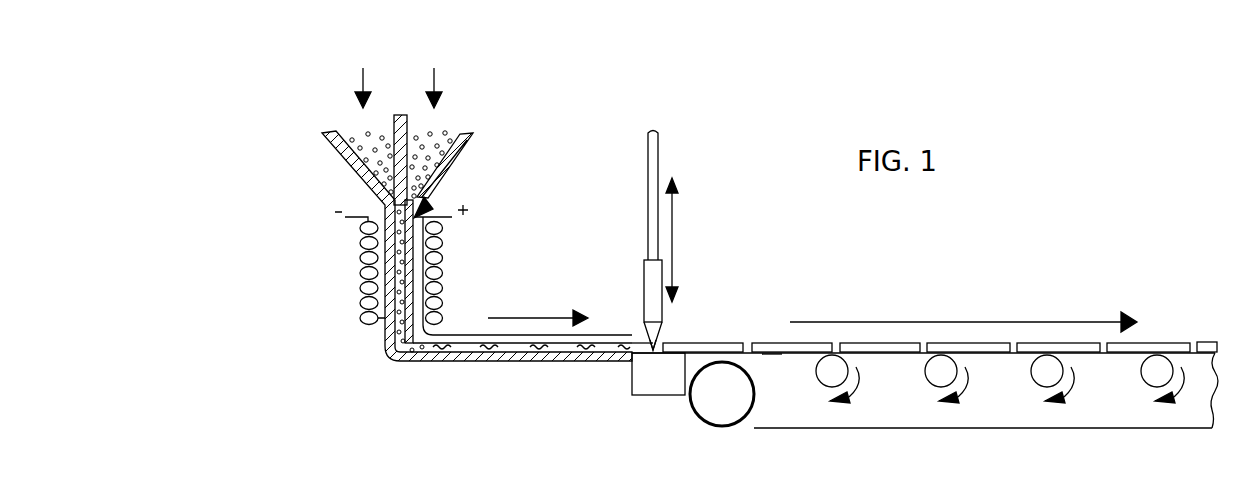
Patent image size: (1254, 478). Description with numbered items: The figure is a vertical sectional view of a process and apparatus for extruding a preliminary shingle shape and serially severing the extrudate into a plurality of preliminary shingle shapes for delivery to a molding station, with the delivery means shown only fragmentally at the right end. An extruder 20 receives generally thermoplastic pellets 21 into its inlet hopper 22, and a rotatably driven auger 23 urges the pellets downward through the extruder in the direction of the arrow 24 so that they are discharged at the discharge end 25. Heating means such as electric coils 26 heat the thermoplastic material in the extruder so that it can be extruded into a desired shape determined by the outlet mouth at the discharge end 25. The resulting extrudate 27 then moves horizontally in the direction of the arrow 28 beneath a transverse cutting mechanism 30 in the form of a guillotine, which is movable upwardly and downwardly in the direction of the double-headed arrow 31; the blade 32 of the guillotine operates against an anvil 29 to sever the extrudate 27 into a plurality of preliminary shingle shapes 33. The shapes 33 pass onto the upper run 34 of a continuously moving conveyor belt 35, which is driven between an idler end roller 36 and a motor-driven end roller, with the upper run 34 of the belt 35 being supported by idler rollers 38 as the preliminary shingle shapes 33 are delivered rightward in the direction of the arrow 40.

The extruder 20 is at (431, 200).
The thermoplastic pellets 21 is at (432, 136).
The inlet hopper 22 is at (467, 141).
The auger 23 is at (408, 122).
The arrow 24 is at (434, 70).
The discharge end 25 is at (641, 340).
The electric coils 26 is at (442, 262).
The extrudate 27 is at (631, 358).
The arrow 28 is at (547, 310).
The anvil 29 is at (657, 380).
The transverse cutting mechanism 30 is at (655, 277).
The double-headed arrow 31 is at (673, 213).
The blade 32 is at (657, 333).
The preliminary shingle shapes 33 is at (703, 342).
The upper run 34 is at (772, 355).
The conveyor belt 35 is at (853, 429).
The idler end roller 36 is at (723, 410).
The idler rollers 38 is at (840, 365).
The arrow 40 is at (1033, 321).